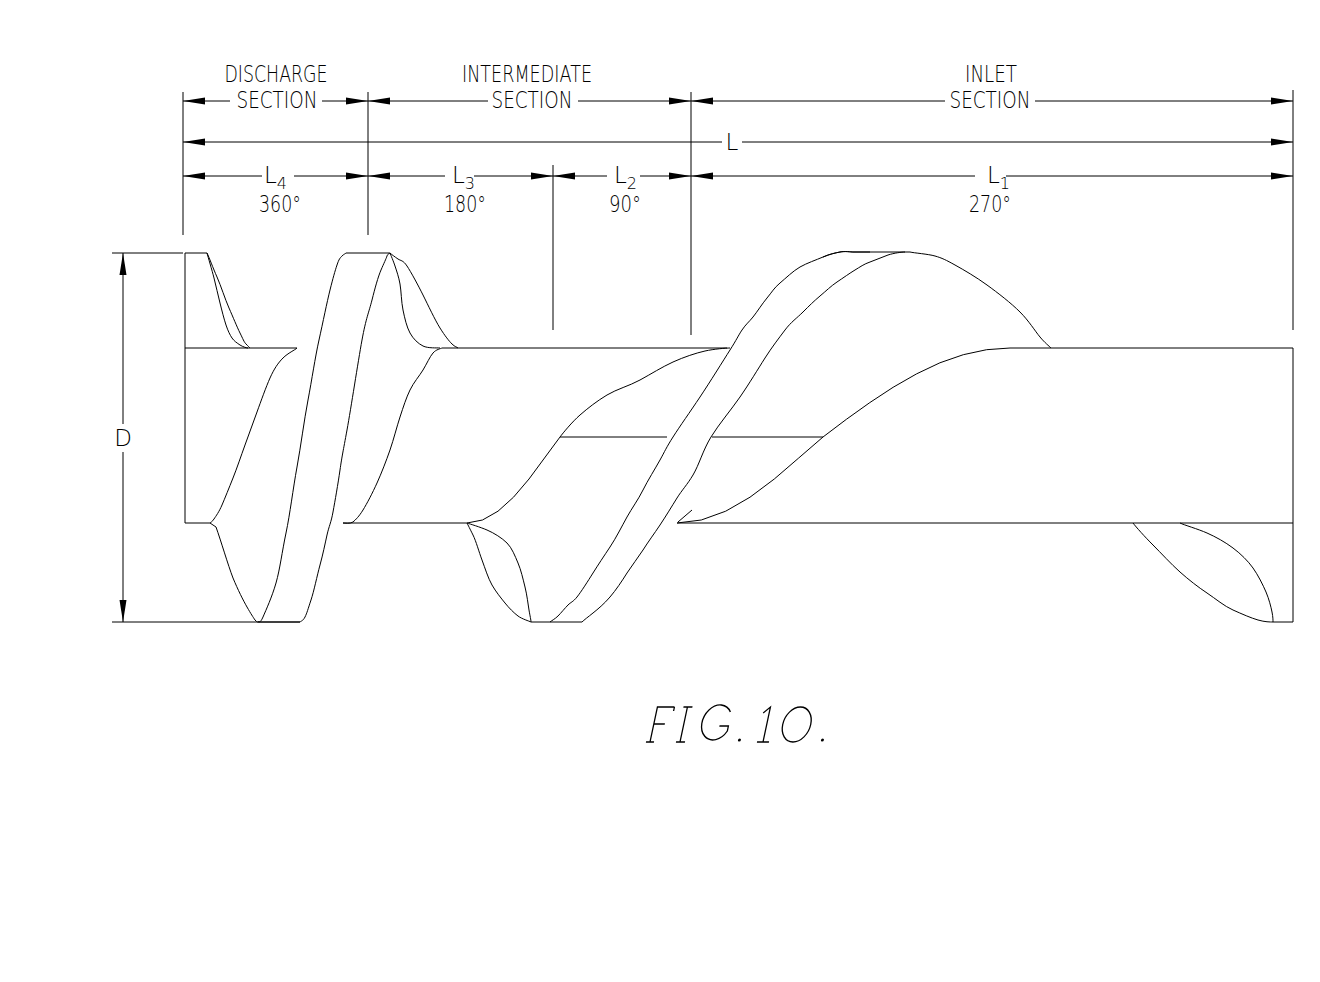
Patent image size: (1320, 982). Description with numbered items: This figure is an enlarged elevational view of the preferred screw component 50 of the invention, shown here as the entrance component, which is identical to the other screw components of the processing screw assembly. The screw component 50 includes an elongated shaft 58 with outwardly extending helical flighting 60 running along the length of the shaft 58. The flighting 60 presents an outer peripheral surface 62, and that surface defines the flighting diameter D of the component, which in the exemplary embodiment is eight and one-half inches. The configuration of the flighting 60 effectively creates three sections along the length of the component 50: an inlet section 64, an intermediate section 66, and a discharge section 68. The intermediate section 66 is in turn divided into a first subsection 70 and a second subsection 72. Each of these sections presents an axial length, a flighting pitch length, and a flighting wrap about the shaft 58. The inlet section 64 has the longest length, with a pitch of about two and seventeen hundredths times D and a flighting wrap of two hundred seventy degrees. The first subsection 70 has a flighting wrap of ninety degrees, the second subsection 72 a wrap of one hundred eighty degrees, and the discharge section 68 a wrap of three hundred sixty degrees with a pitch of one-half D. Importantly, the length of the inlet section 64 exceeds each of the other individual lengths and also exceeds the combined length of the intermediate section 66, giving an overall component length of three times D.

The screw component 50 is at (730, 448).
The elongated shaft 58 is at (880, 515).
The helical flighting 60 is at (1045, 416).
The outer peripheral surface 62 is at (843, 262).
The inlet section 64 is at (1050, 308).
The intermediate section 66 is at (598, 312).
The discharge section 68 is at (222, 583).
The first subsection 70 is at (630, 625).
The second subsection 72 is at (440, 268).